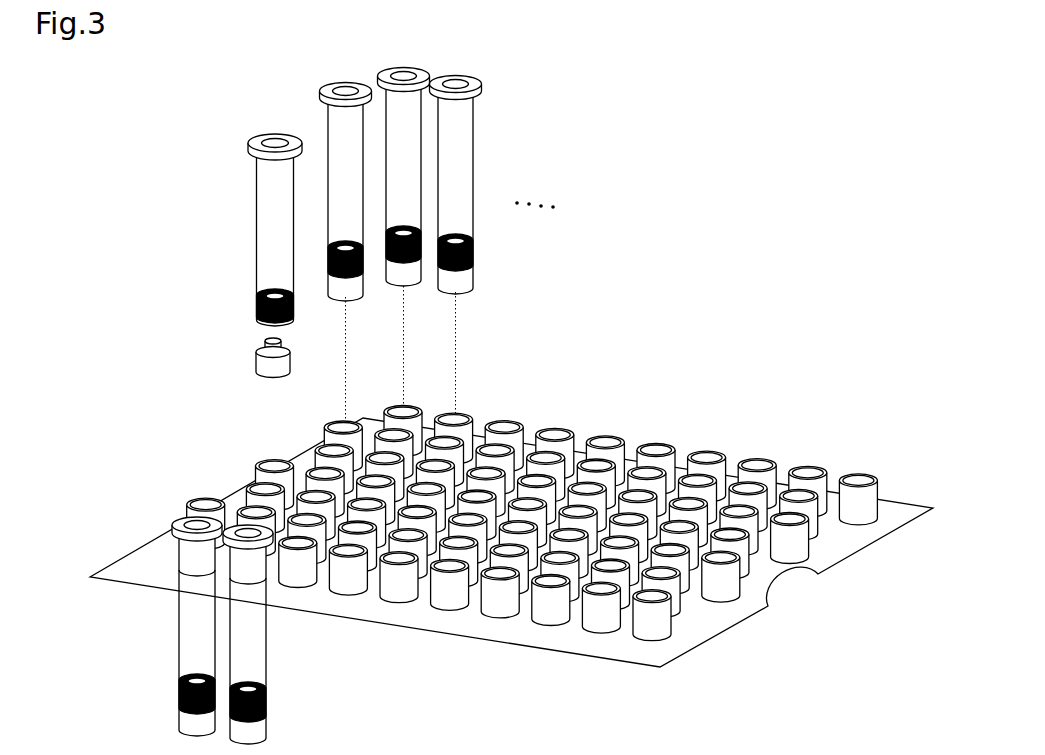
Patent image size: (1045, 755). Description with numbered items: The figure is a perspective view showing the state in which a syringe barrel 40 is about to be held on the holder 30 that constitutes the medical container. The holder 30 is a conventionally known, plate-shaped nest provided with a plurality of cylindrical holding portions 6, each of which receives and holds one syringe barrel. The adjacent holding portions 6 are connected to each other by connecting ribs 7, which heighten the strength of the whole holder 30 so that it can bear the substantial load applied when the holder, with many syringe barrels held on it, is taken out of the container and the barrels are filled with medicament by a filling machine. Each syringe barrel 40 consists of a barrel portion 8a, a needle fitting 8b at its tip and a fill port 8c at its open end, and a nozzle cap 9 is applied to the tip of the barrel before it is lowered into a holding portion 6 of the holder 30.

The syringe barrel 40 is at (141, 256).
The barrel portion of syringe barrel 8a is at (258, 200).
The needle fitting 8b is at (258, 305).
The fill port of syringe barrel 8c is at (272, 134).
The nozzle cap 9 is at (268, 366).
The holder 30 is at (516, 564).
The holding portion 6 is at (872, 494).
The connecting rib 7 is at (840, 520).